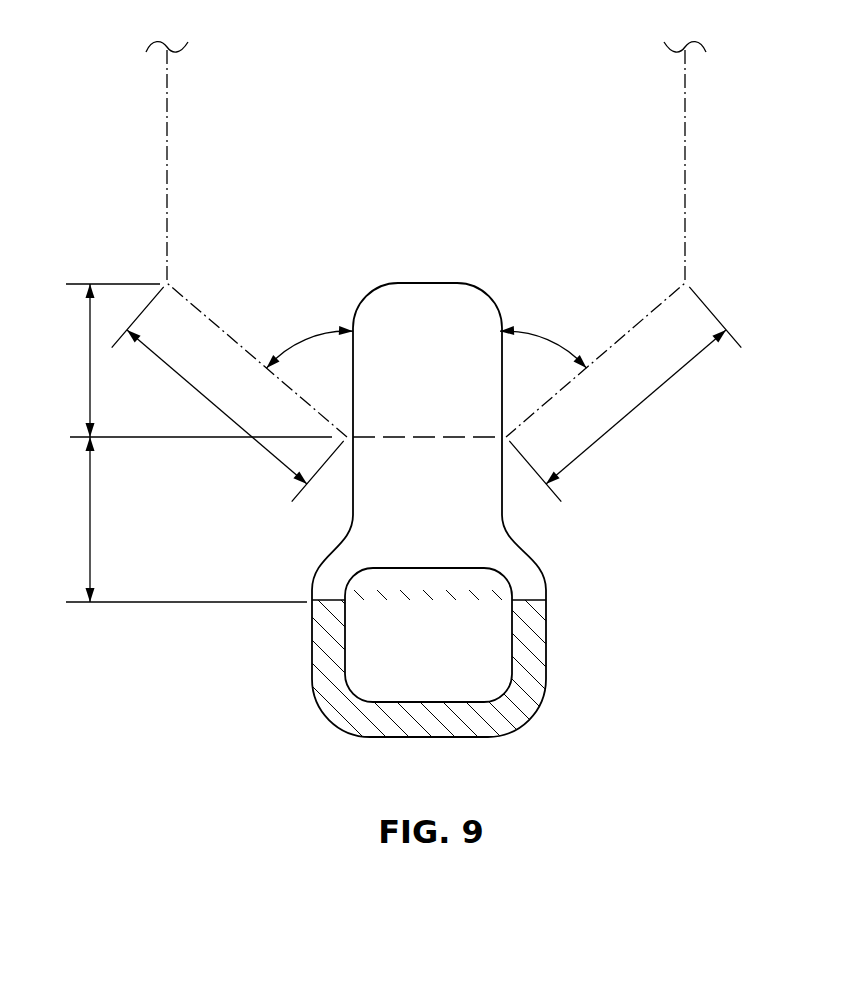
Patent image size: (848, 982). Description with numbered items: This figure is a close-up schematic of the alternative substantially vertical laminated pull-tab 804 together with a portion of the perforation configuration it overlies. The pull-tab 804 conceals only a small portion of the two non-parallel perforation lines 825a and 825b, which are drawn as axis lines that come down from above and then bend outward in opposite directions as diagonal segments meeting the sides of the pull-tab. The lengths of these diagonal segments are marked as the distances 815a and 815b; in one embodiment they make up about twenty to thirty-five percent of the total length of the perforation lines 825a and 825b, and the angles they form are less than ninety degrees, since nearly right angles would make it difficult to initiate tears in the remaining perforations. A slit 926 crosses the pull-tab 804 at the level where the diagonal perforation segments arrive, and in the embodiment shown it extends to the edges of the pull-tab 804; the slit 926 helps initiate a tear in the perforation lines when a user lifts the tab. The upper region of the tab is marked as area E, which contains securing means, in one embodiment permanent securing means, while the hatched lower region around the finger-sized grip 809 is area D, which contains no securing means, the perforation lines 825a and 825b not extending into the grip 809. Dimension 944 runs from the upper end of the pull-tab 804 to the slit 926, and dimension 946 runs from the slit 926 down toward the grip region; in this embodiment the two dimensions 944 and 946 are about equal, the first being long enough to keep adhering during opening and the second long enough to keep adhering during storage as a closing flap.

The pull-tab 804 is at (527, 238).
The finger-sized grip 809 is at (427, 682).
The perforation line 825a is at (169, 150).
The perforation line 825b is at (687, 150).
The angled portion distance 815a is at (189, 378).
The angled portion distance 815b is at (627, 404).
The slit 926 is at (427, 437).
The dimension 944 is at (88, 358).
The dimension 946 is at (88, 527).
The area D is at (323, 668).
The area E is at (422, 300).